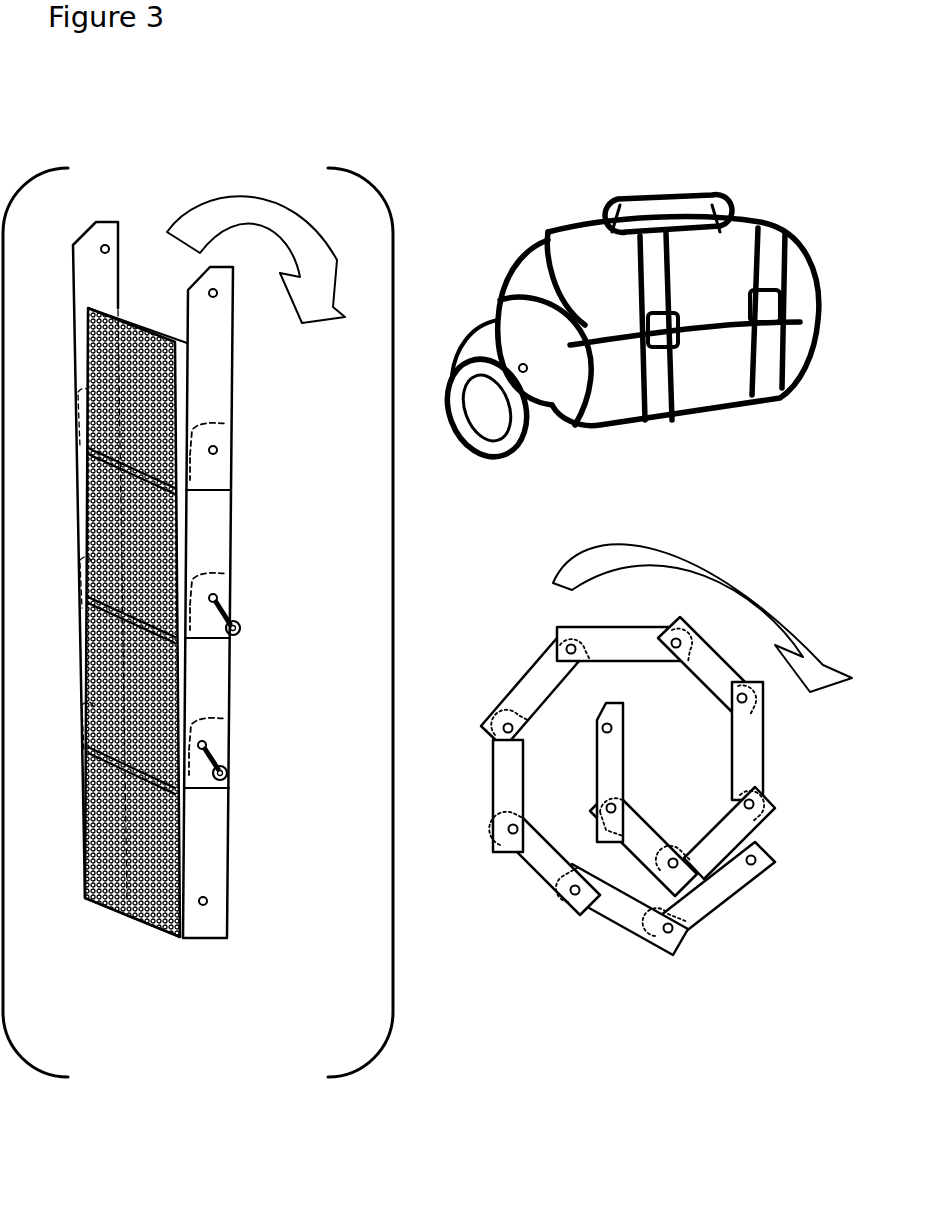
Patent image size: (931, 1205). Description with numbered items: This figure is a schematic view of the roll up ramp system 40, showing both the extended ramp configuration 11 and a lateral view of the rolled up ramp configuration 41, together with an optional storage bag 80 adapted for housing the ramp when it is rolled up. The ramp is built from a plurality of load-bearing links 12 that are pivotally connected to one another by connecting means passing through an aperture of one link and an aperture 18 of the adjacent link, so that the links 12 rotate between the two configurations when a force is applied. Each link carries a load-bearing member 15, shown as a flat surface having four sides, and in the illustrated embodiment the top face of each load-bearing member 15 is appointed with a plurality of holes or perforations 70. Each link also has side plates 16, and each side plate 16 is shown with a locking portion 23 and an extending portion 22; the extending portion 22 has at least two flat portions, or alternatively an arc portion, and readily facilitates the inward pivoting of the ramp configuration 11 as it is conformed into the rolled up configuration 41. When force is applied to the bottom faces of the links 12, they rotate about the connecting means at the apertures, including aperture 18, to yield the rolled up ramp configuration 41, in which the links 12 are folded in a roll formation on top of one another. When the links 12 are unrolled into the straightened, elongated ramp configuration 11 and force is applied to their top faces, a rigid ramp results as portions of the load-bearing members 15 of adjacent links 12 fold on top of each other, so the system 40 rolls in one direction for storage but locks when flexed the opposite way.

The roll up ramp system 40 is at (370, 62).
The storage bag 80 is at (687, 240).
The load-bearing member 15 is at (78, 490).
The holes or perforations 70 is at (80, 617).
The ramp configuration 11 is at (266, 602).
The load-bearing link 12 is at (205, 545).
The aperture 18 is at (208, 901).
The extending portion 22 is at (513, 808).
The side plate 16 is at (760, 763).
The locking portion 23 is at (603, 907).
The rolled up ramp configuration 41 is at (721, 898).